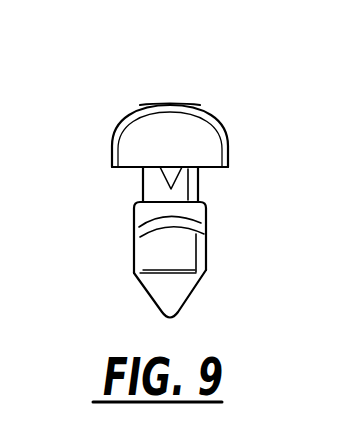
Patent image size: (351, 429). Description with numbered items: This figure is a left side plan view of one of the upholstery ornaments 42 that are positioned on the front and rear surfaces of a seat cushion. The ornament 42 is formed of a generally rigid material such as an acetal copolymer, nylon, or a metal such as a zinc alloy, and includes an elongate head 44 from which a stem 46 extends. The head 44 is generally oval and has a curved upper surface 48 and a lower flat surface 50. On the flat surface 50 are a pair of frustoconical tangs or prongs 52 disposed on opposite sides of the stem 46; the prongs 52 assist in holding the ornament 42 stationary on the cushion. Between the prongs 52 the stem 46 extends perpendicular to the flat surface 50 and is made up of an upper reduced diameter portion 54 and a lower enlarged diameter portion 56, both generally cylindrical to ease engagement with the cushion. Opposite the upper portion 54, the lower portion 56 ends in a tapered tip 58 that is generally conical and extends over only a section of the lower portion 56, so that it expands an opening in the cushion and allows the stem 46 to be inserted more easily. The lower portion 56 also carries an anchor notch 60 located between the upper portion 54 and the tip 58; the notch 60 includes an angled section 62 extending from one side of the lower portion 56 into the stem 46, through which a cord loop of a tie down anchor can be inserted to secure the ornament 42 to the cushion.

The upholstery ornament 42 is at (165, 88).
The head 44 is at (212, 102).
The stem 46 is at (126, 272).
The curved upper surface 48 is at (189, 106).
The lower flat surface 50 is at (127, 172).
The prong 52 is at (189, 174).
The upper reduced diameter portion 54 is at (143, 194).
The lower enlarged diameter portion 56 is at (134, 242).
The tapered tip 58 is at (186, 293).
The anchor notch 60 is at (181, 222).
The angled section 62 is at (198, 229).